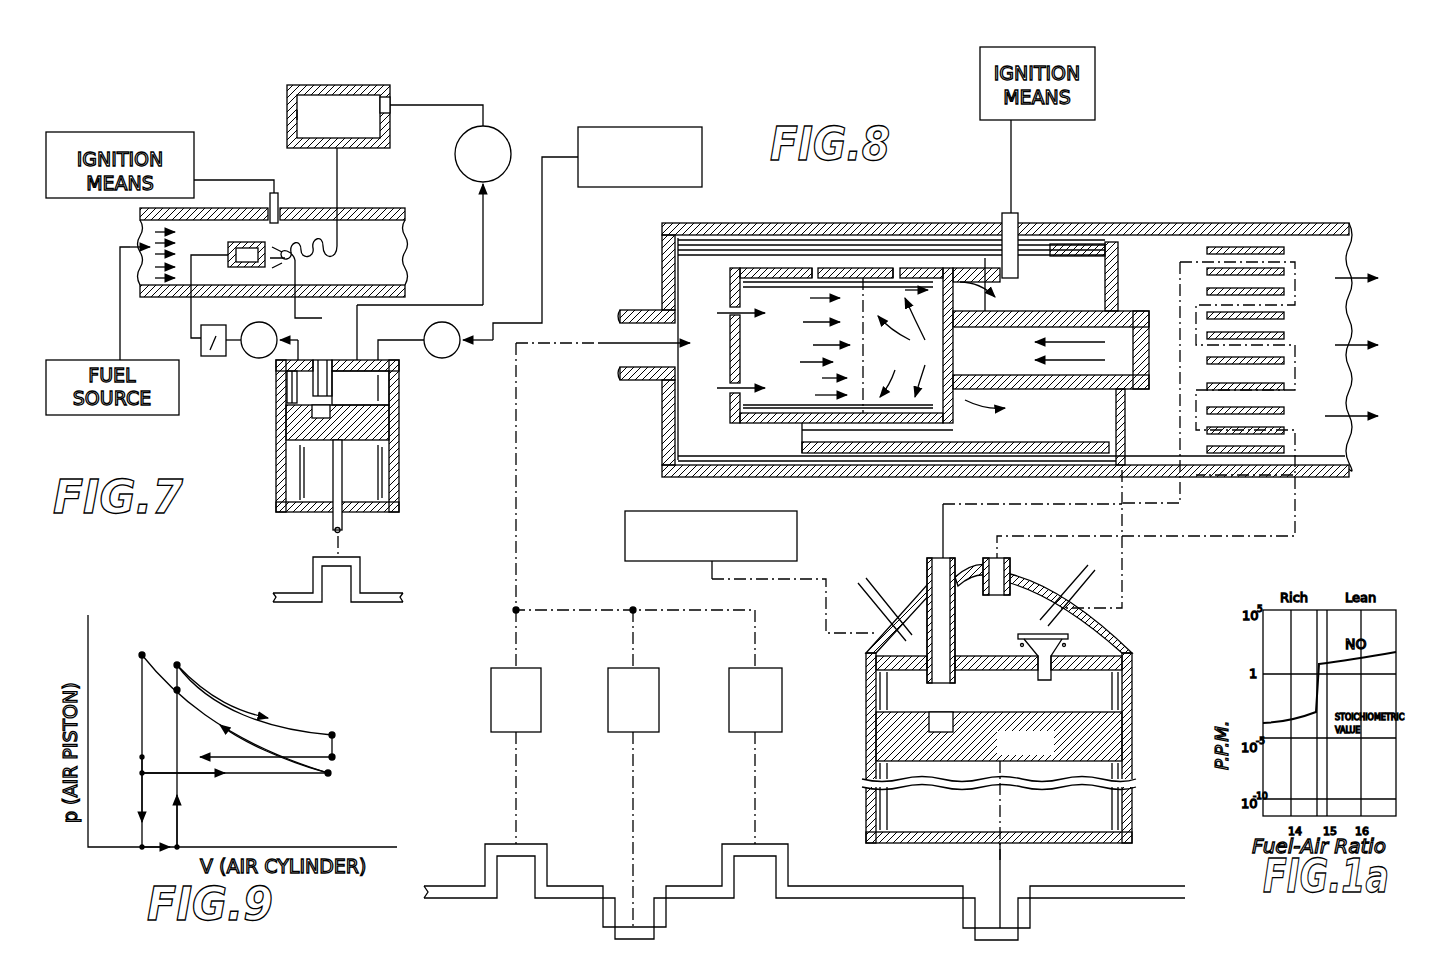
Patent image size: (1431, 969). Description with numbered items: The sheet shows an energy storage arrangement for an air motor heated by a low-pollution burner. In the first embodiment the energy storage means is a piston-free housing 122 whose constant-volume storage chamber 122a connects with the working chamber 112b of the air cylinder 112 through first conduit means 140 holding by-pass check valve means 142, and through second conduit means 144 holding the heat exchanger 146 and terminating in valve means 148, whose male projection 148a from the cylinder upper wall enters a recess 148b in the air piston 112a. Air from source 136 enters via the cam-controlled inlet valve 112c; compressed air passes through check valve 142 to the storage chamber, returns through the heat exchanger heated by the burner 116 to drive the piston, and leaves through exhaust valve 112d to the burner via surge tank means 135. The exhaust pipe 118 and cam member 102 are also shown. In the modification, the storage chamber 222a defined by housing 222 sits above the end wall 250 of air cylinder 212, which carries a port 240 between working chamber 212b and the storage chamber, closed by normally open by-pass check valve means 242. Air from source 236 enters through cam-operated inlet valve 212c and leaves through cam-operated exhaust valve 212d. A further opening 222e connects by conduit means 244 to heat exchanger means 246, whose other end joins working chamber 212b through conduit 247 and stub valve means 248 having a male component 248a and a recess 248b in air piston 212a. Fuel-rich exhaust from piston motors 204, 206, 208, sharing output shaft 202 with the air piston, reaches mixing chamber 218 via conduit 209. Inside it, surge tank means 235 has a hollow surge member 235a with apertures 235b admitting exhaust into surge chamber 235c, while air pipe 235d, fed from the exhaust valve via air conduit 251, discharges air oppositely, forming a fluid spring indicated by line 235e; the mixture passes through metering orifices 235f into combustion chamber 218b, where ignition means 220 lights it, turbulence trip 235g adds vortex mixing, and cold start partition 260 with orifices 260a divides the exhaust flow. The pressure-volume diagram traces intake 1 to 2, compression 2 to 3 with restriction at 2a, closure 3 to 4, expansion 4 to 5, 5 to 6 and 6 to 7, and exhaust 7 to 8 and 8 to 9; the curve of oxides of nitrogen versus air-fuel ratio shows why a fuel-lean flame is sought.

In FIG. 7, the cam member 102 is at (385, 592).
In FIG. 7, the air cylinder 112 is at (399, 483).
In FIG. 7, the air piston 112a is at (382, 425).
In FIG. 7, the working chamber 112b is at (387, 392).
In FIG. 7, the cam-controlled inlet valve 112c is at (449, 357).
In FIG. 7, the exhaust valve 112d is at (249, 358).
In FIG. 7, the burner 116 is at (240, 242).
In FIG. 7, the exhaust pipe 118 is at (373, 208).
In FIG. 7, the piston-free housing 122 is at (334, 85).
In FIG. 7, the storage chamber 122a is at (297, 113).
In FIG. 7, the surge tank means 135 is at (213, 356).
In FIG. 7, the air source 136 is at (662, 102).
In FIG. 7, the first conduit means 140 is at (483, 258).
In FIG. 7, the by-pass check valve means 142 is at (503, 133).
In FIG. 7, the second conduit means 144 is at (338, 173).
In FIG. 7, the heat exchanger 146 is at (335, 244).
In FIG. 7, the valve means 148 is at (330, 352).
In FIG. 7, the male projection 148a is at (312, 385).
In FIG. 7, the recess 148b is at (312, 416).
In FIG. 8, the rotary output shaft 202 is at (1155, 890).
In FIG. 8, the internal combustion piston motor 204 is at (491, 710).
In FIG. 8, the internal combustion piston motor 206 is at (614, 721).
In FIG. 8, the internal combustion piston motor 208 is at (740, 721).
In FIG. 8, the conduit 209 is at (514, 504).
In FIG. 8, the air cylinder 212 is at (1128, 695).
In FIG. 8, the air piston 212a is at (1051, 754).
In FIG. 8, the working chamber 212b is at (1105, 703).
In FIG. 8, the cam-operated inlet valve 212c is at (877, 636).
In FIG. 8, the cam-operated exhaust valve 212d is at (1063, 607).
In FIG. 8, the mixing chamber 218 is at (747, 223).
In FIG. 8, the combustion chamber 218b is at (1073, 418).
In FIG. 8, the ignition means 220 is at (1018, 215).
In FIG. 8, the housing 222 is at (967, 577).
In FIG. 8, the storage chamber 222a is at (1014, 625).
In FIG. 8, the opening 222e is at (997, 557).
In FIG. 8, the surge tank means 235 is at (883, 240).
In FIG. 8, the hollow surge member 235a is at (792, 268).
In FIG. 8, the apertures 235b is at (735, 310).
In FIG. 8, the surge chamber 235c is at (837, 345).
In FIG. 8, the air pipe 235d is at (1063, 311).
In FIG. 8, the fluid spring line 235e is at (853, 285).
In FIG. 8, the metering orifices 235f is at (818, 270).
In FIG. 8, the turbulence trip 235g is at (1011, 421).
In FIG. 8, the air source 236 is at (625, 552).
In FIG. 8, the port 240 is at (1053, 705).
In FIG. 8, the by-pass check valve means 242 is at (1090, 632).
In FIG. 8, the conduit means 244 is at (1293, 490).
In FIG. 8, the heat exchanger means 246 is at (1284, 331).
In FIG. 8, the conduit 247 is at (1180, 497).
In FIG. 8, the stub valve means 248 is at (920, 695).
In FIG. 8, the male component 248a is at (953, 675).
In FIG. 8, the recess 248b is at (929, 722).
In FIG. 8, the end wall 250 is at (1123, 673).
In FIG. 8, the air conduit 251 is at (1120, 515).
In FIG. 8, the cold start partition 260 is at (902, 440).
In FIG. 8, the orifices 260a is at (1080, 245).
In FIG. 9, the state point 1 is at (133, 778).
In FIG. 9, the state point 2 is at (336, 779).
In FIG. 9, the state point 2a is at (183, 688).
In FIG. 9, the state point 3 is at (138, 641).
In FIG. 9, the state point 4 is at (141, 859).
In FIG. 9, the state point 5 is at (176, 859).
In FIG. 9, the state point 6 is at (176, 649).
In FIG. 9, the state point 7 is at (339, 728).
In FIG. 9, the state point 8 is at (341, 755).
In FIG. 9, the state point 9 is at (132, 753).